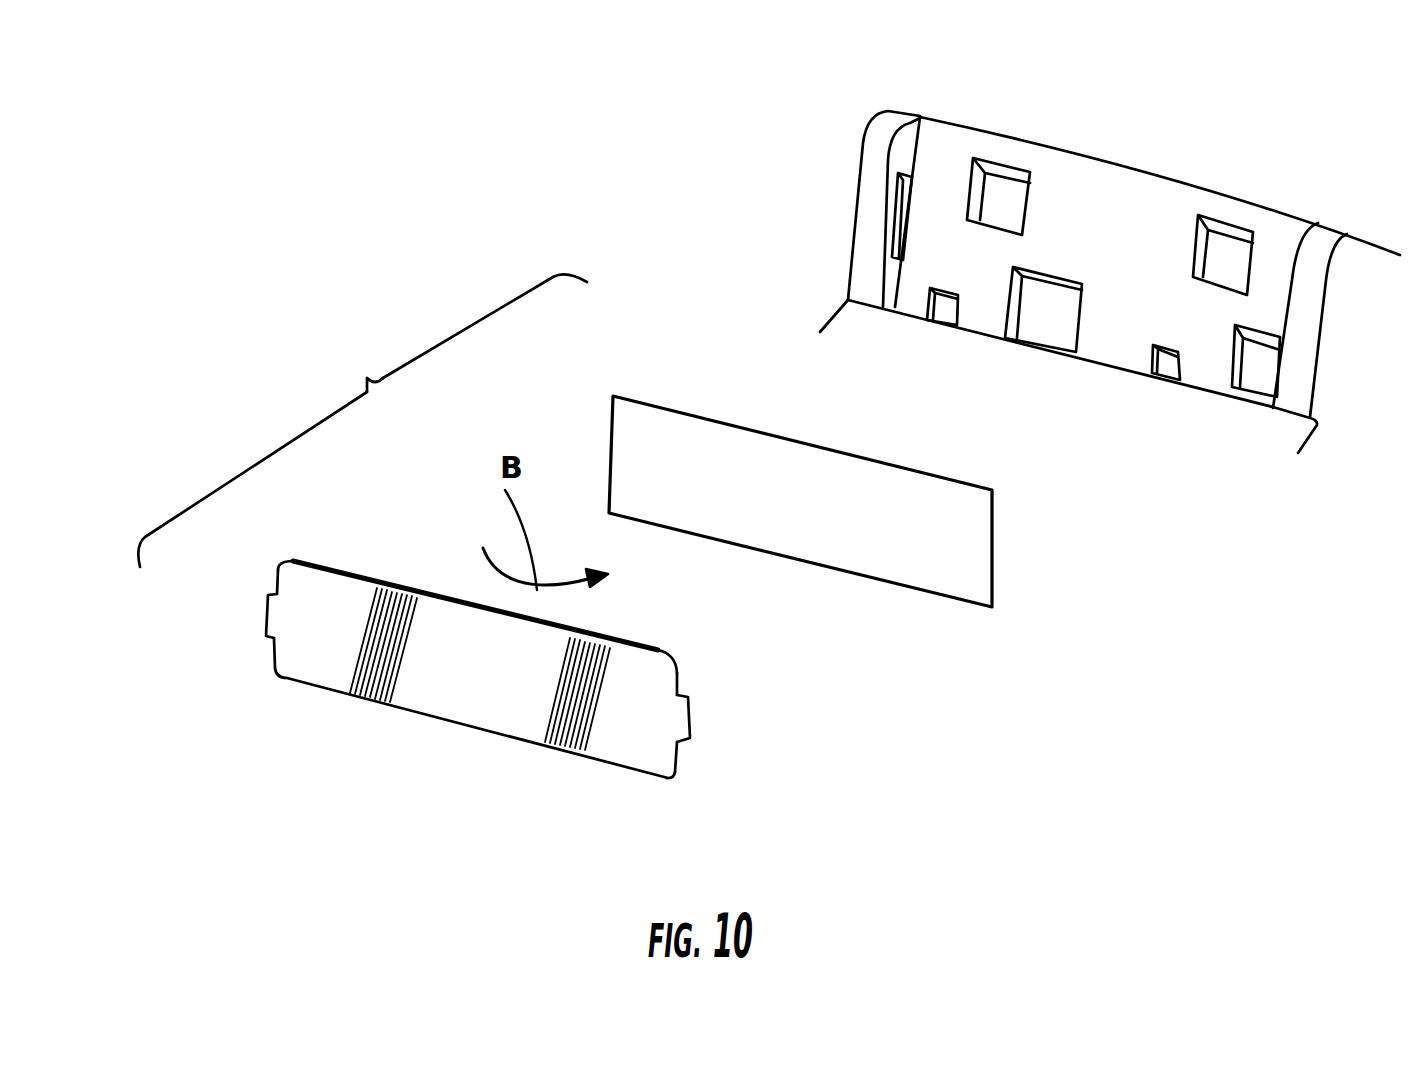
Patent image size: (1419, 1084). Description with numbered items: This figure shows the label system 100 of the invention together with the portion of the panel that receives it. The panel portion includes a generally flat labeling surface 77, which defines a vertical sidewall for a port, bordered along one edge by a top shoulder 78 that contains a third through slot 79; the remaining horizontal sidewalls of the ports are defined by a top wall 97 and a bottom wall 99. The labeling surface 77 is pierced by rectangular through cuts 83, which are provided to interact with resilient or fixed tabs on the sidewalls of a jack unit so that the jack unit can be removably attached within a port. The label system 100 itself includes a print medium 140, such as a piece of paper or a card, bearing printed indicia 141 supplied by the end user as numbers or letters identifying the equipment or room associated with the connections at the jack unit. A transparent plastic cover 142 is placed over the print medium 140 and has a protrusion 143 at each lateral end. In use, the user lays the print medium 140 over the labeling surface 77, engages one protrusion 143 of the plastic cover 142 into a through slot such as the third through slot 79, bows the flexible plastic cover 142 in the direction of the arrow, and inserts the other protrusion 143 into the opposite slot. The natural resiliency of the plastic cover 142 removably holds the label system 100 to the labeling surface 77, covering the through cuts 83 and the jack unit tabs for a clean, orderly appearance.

The labeling surface 77 is at (1157, 265).
The top shoulder 78 is at (900, 157).
The third through slot 79 is at (898, 225).
The rectangular through cuts 83 is at (1000, 192).
The top wall 97 is at (860, 270).
The bottom wall 99 is at (1387, 346).
The label system 100 is at (367, 378).
The print medium 140 is at (995, 552).
The printed indicia 141 is at (940, 570).
The transparent plastic cover 142 is at (467, 725).
The protrusion 143 is at (265, 613).